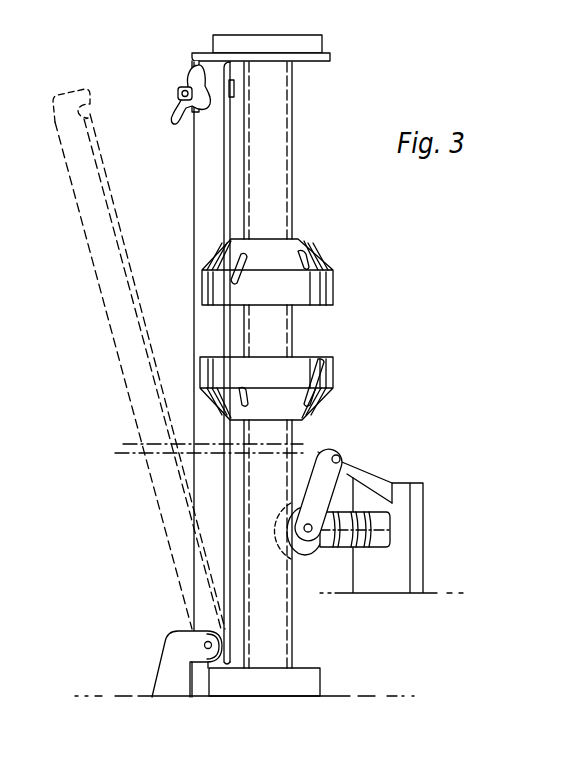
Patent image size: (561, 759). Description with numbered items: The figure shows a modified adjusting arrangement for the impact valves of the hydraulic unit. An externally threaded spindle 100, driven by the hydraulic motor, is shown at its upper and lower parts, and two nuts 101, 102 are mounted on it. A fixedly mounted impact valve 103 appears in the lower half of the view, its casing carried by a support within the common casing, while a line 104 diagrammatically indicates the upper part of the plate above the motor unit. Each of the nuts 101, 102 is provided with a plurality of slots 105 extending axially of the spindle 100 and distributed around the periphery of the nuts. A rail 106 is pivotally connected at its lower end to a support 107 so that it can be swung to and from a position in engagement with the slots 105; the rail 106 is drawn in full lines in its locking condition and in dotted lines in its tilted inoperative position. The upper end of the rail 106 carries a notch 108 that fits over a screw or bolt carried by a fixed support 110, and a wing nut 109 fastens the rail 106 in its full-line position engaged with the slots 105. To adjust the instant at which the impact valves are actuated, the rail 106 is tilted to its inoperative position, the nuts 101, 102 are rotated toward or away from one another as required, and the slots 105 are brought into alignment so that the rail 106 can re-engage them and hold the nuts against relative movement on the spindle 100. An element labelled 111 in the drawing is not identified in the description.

The externally threaded spindle 100 is at (275, 134).
The nut 101 is at (298, 242).
The nut 102 is at (333, 378).
The impact valve 103 is at (402, 530).
The line 104 is at (333, 697).
The slots 105 is at (237, 283).
The rail 106 is at (203, 165).
The support 107 is at (170, 662).
The notch 108 is at (92, 111).
The wing nut 109 is at (182, 72).
The fixed support 110 is at (199, 60).
The guide wall 111 is at (230, 203).